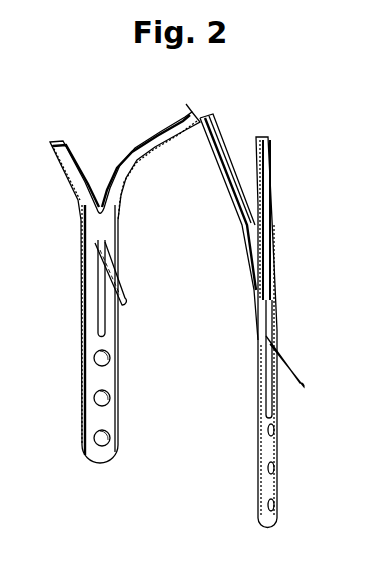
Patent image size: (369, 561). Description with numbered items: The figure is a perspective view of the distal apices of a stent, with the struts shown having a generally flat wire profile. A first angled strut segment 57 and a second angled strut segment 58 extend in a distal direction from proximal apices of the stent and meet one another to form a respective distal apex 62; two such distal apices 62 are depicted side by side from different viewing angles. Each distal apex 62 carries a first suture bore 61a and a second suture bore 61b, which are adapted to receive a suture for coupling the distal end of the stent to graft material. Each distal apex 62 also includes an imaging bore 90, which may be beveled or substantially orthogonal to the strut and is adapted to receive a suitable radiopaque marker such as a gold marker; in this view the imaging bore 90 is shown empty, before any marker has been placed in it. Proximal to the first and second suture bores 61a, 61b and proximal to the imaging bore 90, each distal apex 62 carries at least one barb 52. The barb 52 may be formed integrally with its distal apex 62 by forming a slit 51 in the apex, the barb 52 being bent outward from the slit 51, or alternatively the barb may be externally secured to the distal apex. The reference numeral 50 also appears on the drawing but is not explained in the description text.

The bone plate 50 is at (75, 265).
The slit 51 is at (99, 325).
The barb 52 is at (121, 283).
The first angled strut segment 57 is at (268, 178).
The second angled strut segment 58 is at (224, 140).
The first suture bore 61a is at (94, 441).
The second suture bore 61b is at (94, 362).
The distal apex 62 is at (118, 459).
The imaging bore 90 is at (94, 401).